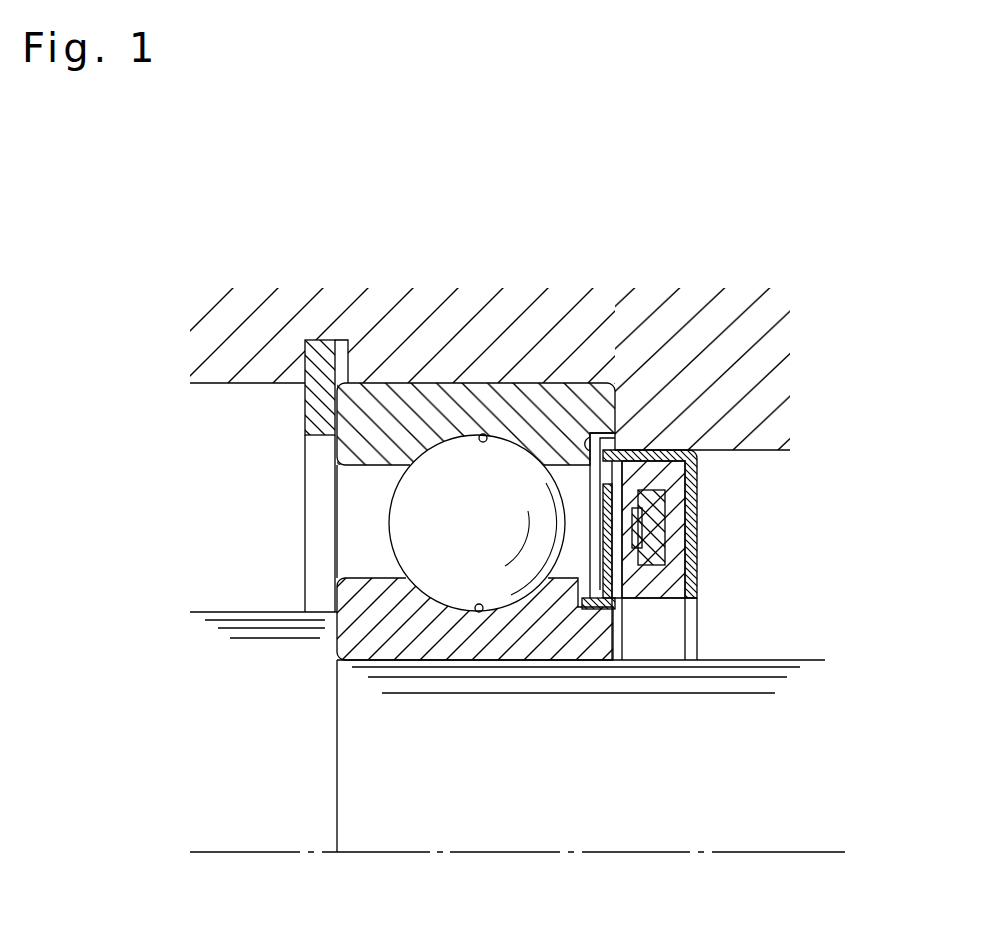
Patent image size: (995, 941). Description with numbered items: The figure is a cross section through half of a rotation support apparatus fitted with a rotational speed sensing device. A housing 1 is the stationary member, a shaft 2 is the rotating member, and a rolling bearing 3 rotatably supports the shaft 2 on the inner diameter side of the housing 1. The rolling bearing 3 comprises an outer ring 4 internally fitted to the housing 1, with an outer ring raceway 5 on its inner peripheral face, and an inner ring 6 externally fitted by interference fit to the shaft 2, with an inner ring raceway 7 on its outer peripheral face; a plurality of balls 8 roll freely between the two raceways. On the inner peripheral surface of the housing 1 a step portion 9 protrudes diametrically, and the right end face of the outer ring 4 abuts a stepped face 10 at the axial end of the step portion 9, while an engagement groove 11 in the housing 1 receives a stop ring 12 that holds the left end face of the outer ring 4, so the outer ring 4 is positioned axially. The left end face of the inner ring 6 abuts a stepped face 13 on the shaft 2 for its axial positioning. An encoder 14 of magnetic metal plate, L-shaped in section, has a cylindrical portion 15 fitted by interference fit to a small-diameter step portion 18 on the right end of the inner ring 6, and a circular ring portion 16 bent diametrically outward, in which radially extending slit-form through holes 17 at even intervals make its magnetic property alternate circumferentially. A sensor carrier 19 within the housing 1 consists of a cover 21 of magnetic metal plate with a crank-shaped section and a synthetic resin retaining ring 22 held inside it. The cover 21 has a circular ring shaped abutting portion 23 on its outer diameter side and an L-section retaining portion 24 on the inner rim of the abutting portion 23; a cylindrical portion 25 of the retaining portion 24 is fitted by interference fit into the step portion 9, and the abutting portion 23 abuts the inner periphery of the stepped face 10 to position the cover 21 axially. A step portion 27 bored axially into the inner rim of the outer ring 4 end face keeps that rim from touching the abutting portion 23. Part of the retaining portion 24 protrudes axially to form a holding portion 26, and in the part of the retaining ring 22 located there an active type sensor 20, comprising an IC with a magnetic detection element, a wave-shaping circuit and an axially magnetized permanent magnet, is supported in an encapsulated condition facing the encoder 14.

The housing 1 is at (381, 313).
The shaft 2 is at (470, 833).
The rolling bearing 3 is at (388, 548).
The outer ring 4 is at (423, 390).
The outer ring raceway 5 is at (482, 434).
The inner ring 6 is at (402, 645).
The inner ring raceway 7 is at (478, 612).
The balls 8 is at (400, 508).
The step portion 9 is at (696, 450).
The stepped face 10 is at (603, 433).
The engagement groove 11 is at (318, 336).
The stop ring 12 is at (316, 392).
The stepped face 13 is at (337, 717).
The encoder 14 is at (612, 562).
The cylindrical portion 15 is at (597, 610).
The circular ring portion 16 is at (690, 590).
The through holes 17 is at (677, 470).
The small-diameter step portion 18 is at (612, 575).
The sensor carrier 19 is at (715, 450).
The active type sensor 20 is at (645, 527).
The cover 21 is at (730, 450).
The retaining ring 22 is at (678, 598).
The abutting portion 23 is at (614, 447).
The retaining portion 24 is at (650, 513).
The cylindrical portion 25 is at (728, 450).
The holding portion 26 is at (636, 514).
The step portion 27 is at (589, 438).